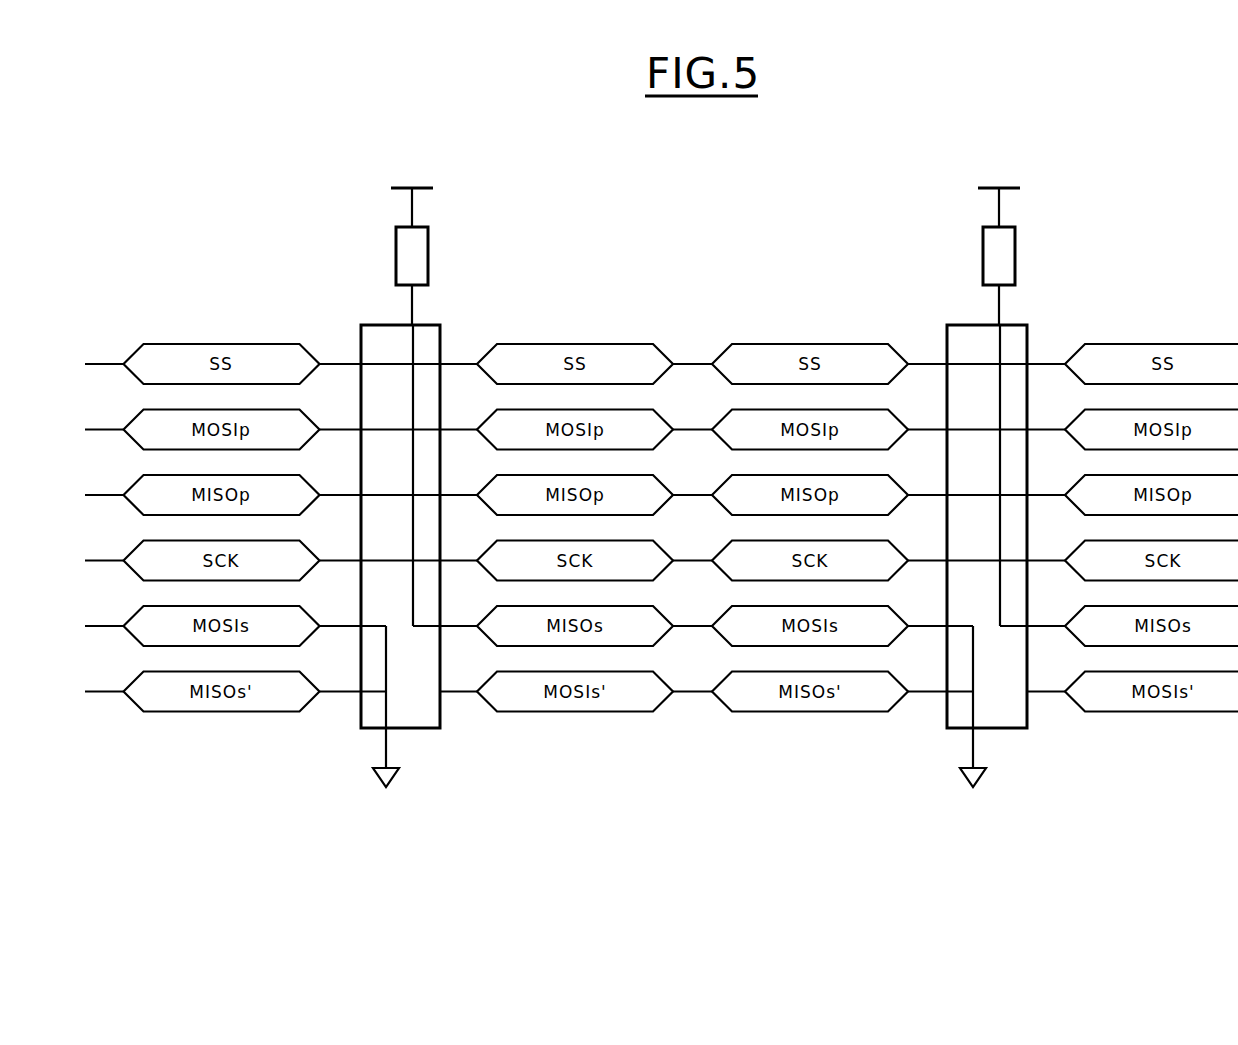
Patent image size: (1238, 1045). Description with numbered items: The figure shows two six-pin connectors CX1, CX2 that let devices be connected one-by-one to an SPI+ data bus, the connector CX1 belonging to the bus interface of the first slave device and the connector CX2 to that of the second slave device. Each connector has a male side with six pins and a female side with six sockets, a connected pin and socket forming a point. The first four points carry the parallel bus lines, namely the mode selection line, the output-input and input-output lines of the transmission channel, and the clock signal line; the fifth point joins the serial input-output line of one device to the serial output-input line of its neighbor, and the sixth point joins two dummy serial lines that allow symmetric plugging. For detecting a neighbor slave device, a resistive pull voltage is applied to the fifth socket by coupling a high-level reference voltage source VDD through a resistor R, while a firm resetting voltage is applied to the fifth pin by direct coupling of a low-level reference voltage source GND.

The connector CX1 is at (423, 730).
The connector CX2 is at (1010, 730).
The resistor R is at (396, 257).
The reference voltage source of high level VDD is at (705, 179).
The reference voltage source of low level GND is at (373, 777).